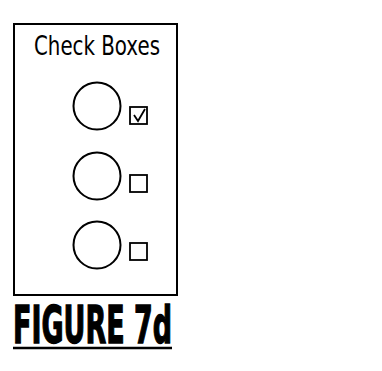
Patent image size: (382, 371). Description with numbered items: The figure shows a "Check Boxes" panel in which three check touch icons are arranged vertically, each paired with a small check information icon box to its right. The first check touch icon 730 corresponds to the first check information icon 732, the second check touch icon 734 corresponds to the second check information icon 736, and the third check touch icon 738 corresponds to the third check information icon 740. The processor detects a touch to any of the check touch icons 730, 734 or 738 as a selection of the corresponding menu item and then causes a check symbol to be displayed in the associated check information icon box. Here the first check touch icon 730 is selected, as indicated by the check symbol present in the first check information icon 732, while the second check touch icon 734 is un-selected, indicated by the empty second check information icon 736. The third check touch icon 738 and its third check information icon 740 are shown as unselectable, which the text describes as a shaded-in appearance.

The first check touch icon 730 is at (110, 86).
The first check information icon 732 is at (147, 115).
The second check touch icon 734 is at (110, 155).
The second check information icon 736 is at (147, 183).
The third check touch icon 738 is at (110, 224).
The third check information icon 740 is at (147, 250).